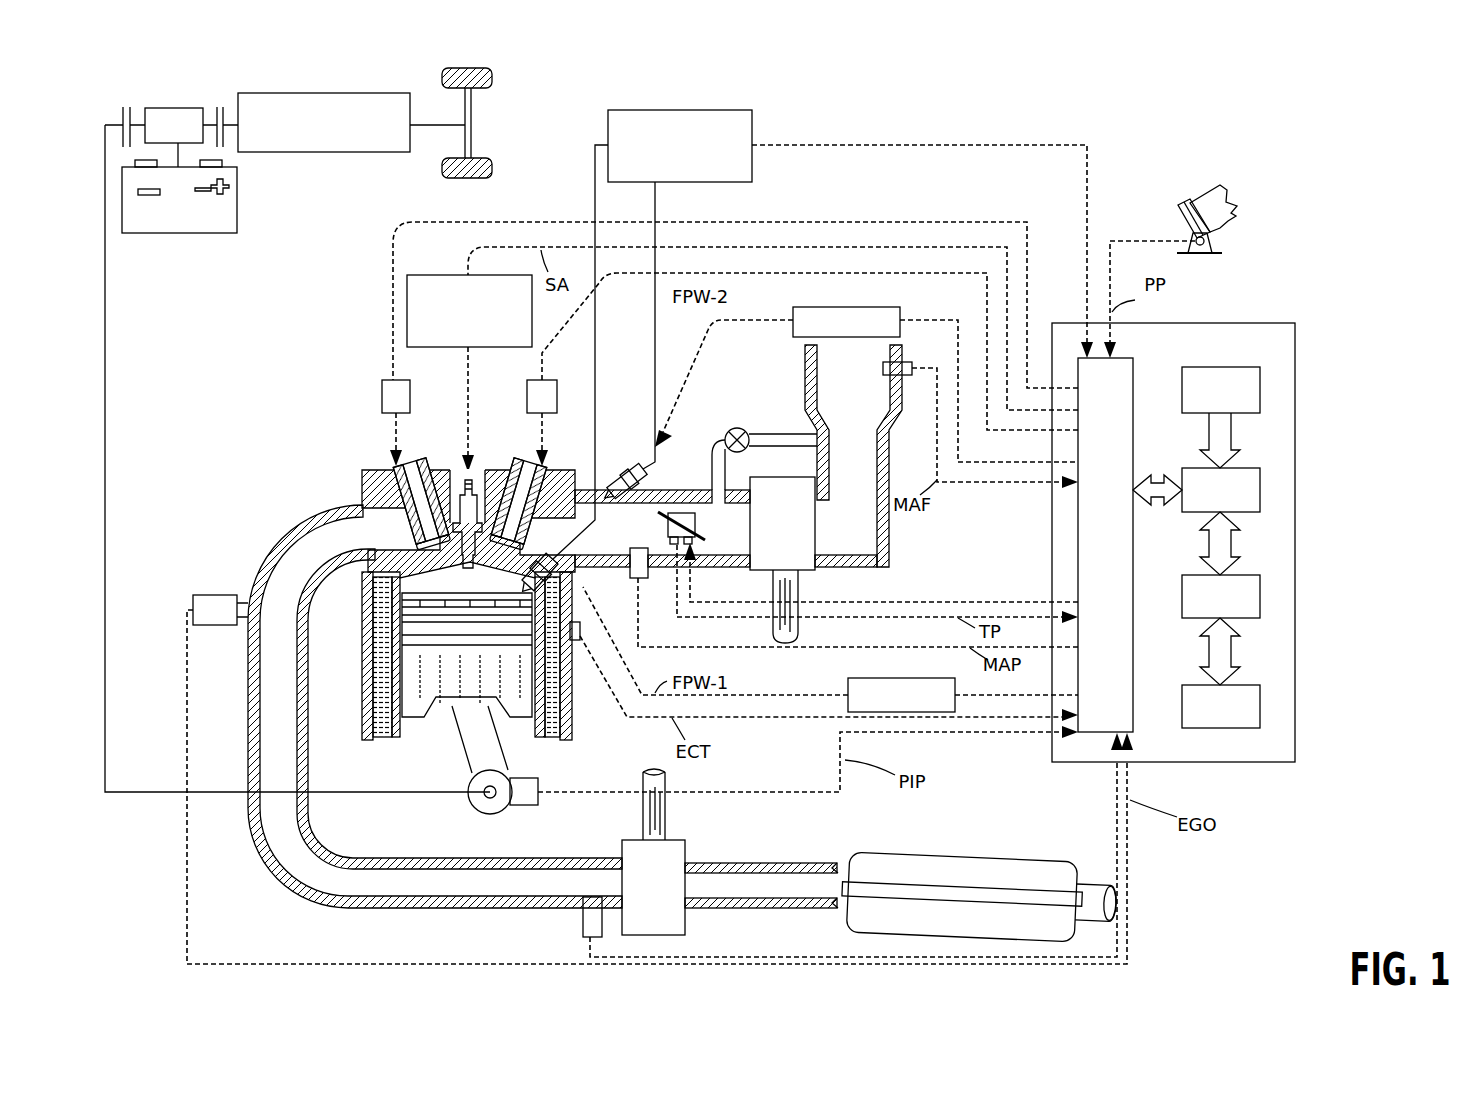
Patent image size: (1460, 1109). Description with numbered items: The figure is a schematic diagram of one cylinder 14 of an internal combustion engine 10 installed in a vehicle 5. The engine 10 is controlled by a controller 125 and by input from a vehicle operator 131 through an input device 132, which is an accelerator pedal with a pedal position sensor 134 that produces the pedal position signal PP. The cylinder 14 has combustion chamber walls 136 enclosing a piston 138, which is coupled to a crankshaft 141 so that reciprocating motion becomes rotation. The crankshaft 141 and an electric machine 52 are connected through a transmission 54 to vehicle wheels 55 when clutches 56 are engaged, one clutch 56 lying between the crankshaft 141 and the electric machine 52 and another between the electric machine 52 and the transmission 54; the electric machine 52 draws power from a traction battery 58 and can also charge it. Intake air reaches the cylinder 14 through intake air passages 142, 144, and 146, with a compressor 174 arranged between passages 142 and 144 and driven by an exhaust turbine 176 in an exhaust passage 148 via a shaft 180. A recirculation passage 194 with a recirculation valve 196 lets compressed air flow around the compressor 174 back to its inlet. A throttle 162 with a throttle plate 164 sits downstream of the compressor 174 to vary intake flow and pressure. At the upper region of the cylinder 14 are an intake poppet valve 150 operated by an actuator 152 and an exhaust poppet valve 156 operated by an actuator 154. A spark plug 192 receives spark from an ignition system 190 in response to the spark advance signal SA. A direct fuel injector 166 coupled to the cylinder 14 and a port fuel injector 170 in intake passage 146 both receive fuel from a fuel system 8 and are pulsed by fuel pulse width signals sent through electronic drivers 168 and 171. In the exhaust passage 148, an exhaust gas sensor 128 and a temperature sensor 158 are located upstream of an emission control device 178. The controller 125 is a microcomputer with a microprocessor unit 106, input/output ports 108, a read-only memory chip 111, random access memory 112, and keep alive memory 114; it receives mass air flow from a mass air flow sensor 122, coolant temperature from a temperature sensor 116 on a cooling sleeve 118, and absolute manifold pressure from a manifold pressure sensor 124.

The vehicle 5 is at (1347, 135).
The fuel system 8 is at (718, 110).
The internal combustion engine 10 is at (282, 420).
The cylinder 14 is at (420, 578).
The electric machine 52 is at (180, 107).
The transmission 54 is at (390, 152).
The vehicle wheels 55 is at (478, 180).
The clutch 56 is at (122, 112).
The traction battery 58 is at (185, 233).
The microprocessor unit 106 is at (1260, 492).
The input/output ports 108 is at (1135, 372).
The read-only memory chip 111 is at (1260, 390).
The random access memory 112 is at (1260, 598).
The keep alive memory 114 is at (1260, 706).
The temperature sensor 116 is at (593, 638).
The cooling sleeve 118 is at (555, 683).
The mass air flow sensor 122 is at (912, 362).
The MAP sensor 124 is at (640, 580).
The controller 125 is at (1295, 330).
The exhaust gas sensor 128 is at (193, 604).
The vehicle operator 131 is at (1235, 201).
The input device 132 is at (1178, 215).
The pedal position sensor 134 is at (1212, 243).
The combustion chamber walls 136 is at (405, 722).
The piston 138 is at (452, 710).
The crankshaft 141 is at (482, 812).
The intake air passage 142 is at (853, 456).
The intake air passage 144 is at (726, 528).
The intake air passage 146 is at (637, 527).
The exhaust passage 148 is at (435, 706).
The intake poppet valve 150 is at (510, 555).
The actuator 152 is at (527, 395).
The actuator 154 is at (381, 393).
The exhaust poppet valve 156 is at (363, 505).
The temperature sensor 158 is at (583, 925).
The throttle 162 is at (685, 512).
The throttle plate 164 is at (703, 545).
The fuel injector 166 is at (551, 560).
The electronic driver 168 is at (850, 680).
The fuel injector 170 is at (633, 472).
The electronic driver 171 is at (794, 308).
The compressor 174 is at (782, 523).
The exhaust turbine 176 is at (653, 887).
The emission control device 178 is at (1035, 860).
The shaft 180 is at (800, 596).
The ignition system 190 is at (466, 275).
The spark plug 192 is at (460, 485).
The recirculation passage 194 is at (700, 408).
The recirculation valve 196 is at (728, 430).